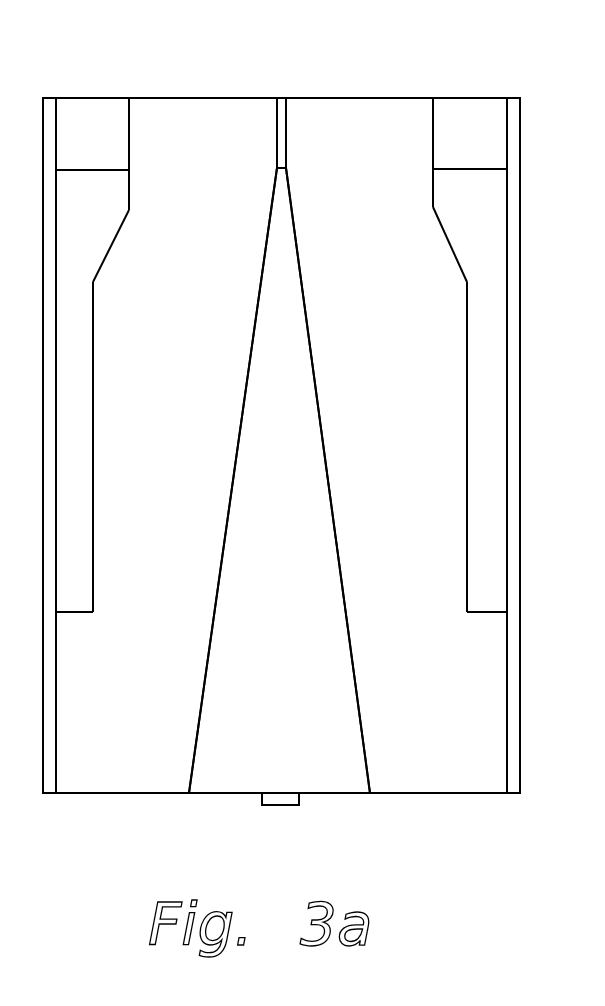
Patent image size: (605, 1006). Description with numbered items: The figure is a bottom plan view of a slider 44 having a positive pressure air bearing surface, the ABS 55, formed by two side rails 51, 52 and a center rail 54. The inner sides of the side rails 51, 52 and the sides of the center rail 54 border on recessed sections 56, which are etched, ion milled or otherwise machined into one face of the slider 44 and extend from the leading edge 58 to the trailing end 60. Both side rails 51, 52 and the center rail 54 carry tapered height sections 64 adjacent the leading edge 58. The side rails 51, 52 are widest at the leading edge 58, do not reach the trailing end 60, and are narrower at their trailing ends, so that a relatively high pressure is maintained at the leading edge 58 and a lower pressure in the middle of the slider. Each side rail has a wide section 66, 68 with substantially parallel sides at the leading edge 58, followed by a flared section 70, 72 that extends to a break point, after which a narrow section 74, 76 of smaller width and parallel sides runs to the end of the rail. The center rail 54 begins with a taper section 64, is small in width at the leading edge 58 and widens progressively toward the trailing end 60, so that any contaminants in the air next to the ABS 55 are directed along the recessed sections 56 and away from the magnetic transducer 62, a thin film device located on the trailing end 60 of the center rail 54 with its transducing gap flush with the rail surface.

The slider 44 is at (110, 808).
The side rail 51 is at (88, 505).
The side rail 52 is at (497, 505).
The center rail 54 is at (288, 681).
The air bearing surface 55 is at (490, 612).
The recessed sections 56 is at (188, 437).
The leading edge 58 is at (377, 97).
The trailing end 60 is at (460, 793).
The magnetic transducer 62 is at (290, 806).
The tapered height sections 64 is at (82, 108).
The wide section 66 is at (131, 186).
The wide section 68 is at (432, 190).
The flared section 70 is at (115, 237).
The flared section 72 is at (448, 247).
The narrow section 74 is at (95, 562).
The narrow section 76 is at (463, 558).